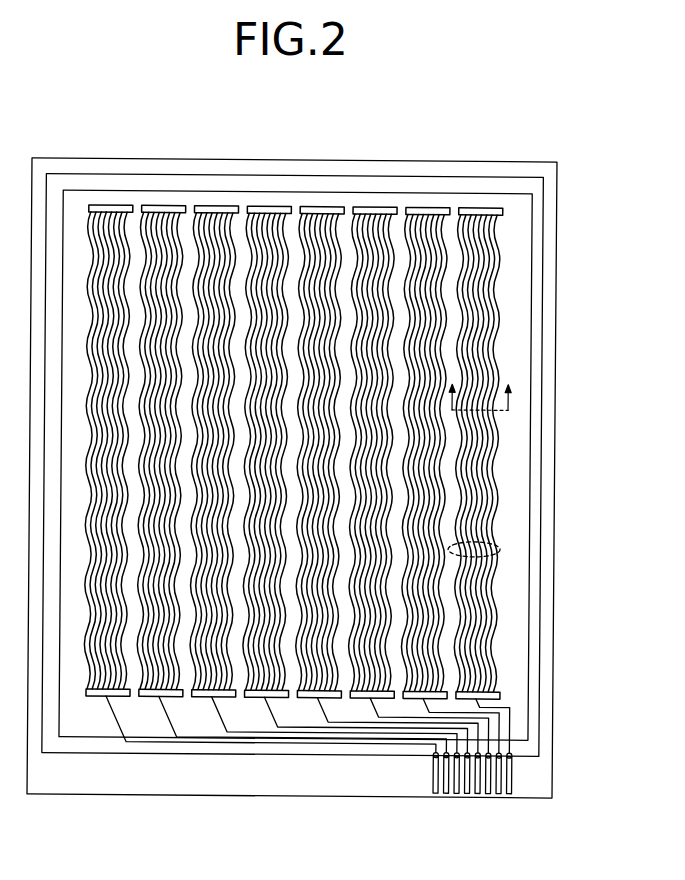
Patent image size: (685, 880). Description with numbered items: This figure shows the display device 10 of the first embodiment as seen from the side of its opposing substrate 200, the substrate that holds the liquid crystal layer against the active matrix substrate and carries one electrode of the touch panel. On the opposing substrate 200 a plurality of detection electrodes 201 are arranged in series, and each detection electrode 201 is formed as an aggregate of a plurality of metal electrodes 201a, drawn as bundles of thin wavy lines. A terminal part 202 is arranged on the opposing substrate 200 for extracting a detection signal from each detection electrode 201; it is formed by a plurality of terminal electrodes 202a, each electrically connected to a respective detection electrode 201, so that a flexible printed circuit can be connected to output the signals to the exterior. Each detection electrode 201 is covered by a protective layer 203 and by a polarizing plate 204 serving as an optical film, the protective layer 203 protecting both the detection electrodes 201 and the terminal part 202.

The display device 10 is at (573, 175).
The opposing substrate 200 is at (555, 278).
The detection electrode 201 is at (352, 452).
The metal electrode 201a is at (555, 454).
The terminal part 202 is at (434, 795).
The terminal electrode 202a is at (436, 767).
The protective layer 203 is at (541, 446).
The polarizing plate 204 is at (530, 493).